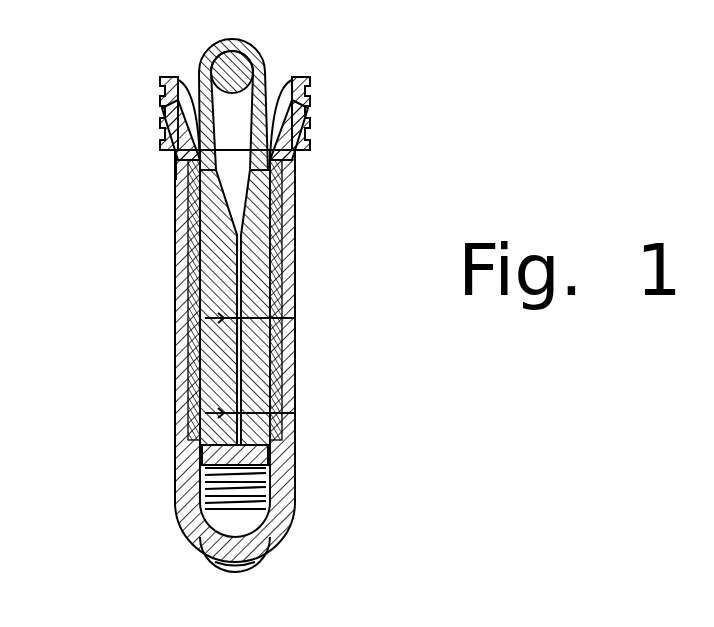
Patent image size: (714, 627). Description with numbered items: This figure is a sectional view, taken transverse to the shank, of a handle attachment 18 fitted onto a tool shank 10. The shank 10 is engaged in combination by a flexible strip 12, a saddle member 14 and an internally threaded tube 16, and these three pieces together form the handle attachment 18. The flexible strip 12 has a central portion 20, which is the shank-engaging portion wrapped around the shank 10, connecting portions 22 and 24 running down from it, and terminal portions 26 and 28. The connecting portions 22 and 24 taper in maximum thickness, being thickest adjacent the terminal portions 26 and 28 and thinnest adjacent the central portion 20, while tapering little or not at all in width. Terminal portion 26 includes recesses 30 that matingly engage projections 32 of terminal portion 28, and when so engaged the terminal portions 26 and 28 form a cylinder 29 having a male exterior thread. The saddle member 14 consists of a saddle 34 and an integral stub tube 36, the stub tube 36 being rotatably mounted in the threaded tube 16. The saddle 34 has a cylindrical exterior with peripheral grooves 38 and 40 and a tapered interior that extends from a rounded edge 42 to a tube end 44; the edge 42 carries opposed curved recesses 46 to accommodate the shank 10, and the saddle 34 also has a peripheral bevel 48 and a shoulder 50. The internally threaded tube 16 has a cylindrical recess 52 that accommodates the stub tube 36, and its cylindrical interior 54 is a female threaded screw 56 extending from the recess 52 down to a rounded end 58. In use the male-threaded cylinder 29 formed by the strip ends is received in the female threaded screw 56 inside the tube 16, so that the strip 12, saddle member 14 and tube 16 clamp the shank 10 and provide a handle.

The tool shank 10 is at (262, 64).
The flexible strip 12 is at (176, 294).
The saddle member 14 is at (300, 140).
The internally threaded tube 16 is at (296, 340).
The handle attachment 18 is at (158, 383).
The central portion 20 is at (212, 60).
The connecting portion 22 is at (188, 252).
The connecting portion 24 is at (296, 234).
The terminal portion 26 is at (177, 470).
The terminal portion 28 is at (296, 420).
The cylinder 29 is at (202, 556).
The recesses 30 is at (176, 358).
The projections 32 is at (296, 322).
The saddle 34 is at (308, 110).
The stub tube 36 is at (296, 202).
The peripheral groove 38 is at (159, 100).
The peripheral groove 40 is at (160, 128).
The rounded edge 42 is at (285, 78).
The tube end 44 is at (298, 152).
The curved recesses 46 is at (187, 178).
The peripheral bevel 48 is at (170, 150).
The shoulder 50 is at (182, 172).
The cylindrical recess 52 is at (296, 260).
The cylindrical interior 54 is at (296, 447).
The female threaded screw 56 is at (296, 488).
The rounded end 58 is at (297, 532).